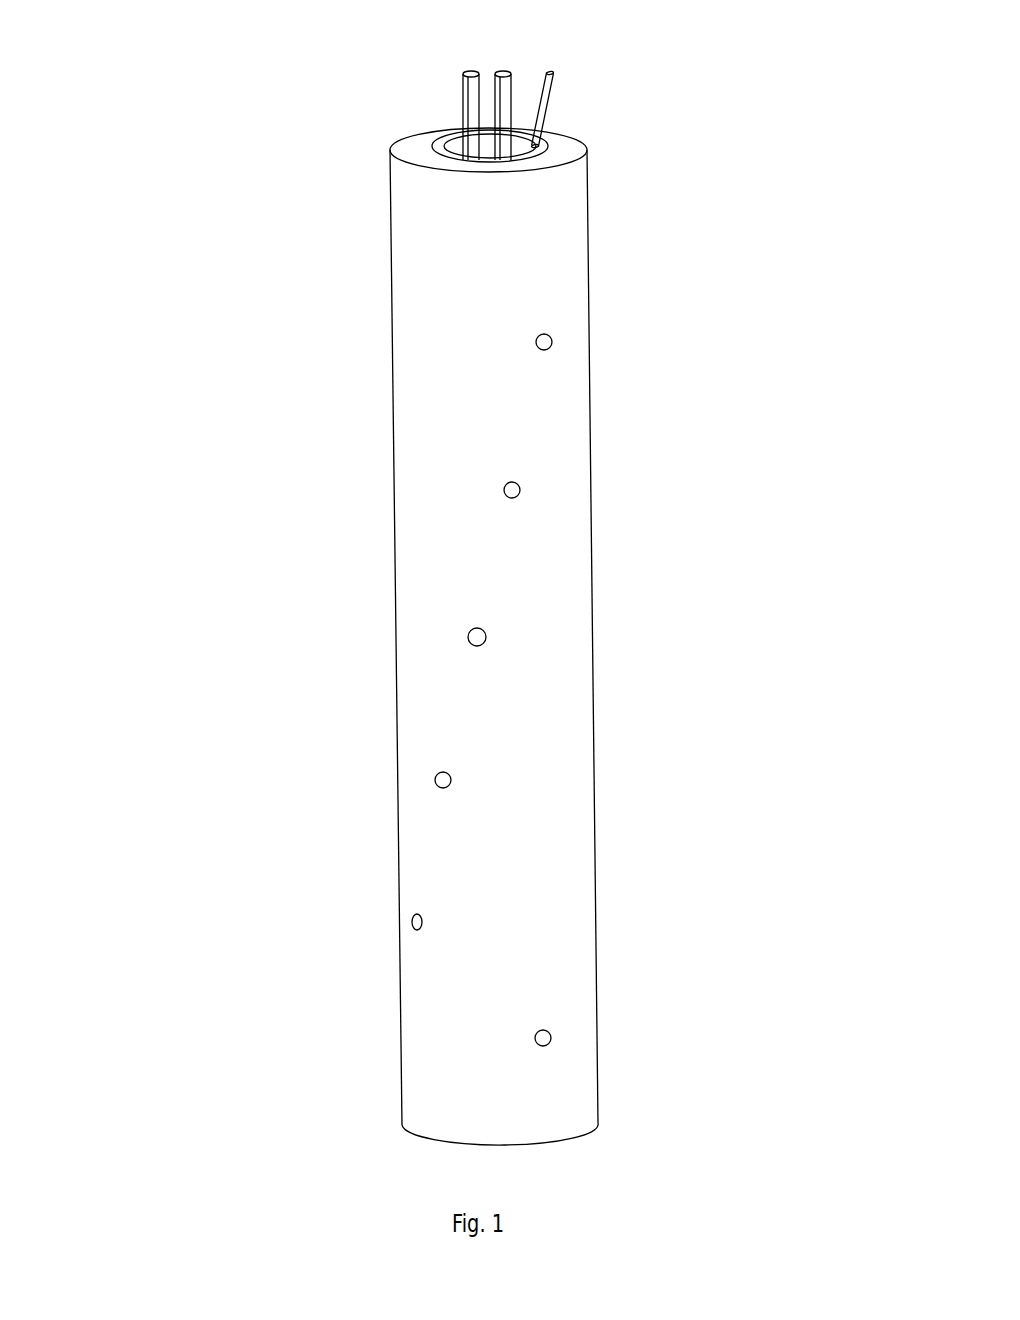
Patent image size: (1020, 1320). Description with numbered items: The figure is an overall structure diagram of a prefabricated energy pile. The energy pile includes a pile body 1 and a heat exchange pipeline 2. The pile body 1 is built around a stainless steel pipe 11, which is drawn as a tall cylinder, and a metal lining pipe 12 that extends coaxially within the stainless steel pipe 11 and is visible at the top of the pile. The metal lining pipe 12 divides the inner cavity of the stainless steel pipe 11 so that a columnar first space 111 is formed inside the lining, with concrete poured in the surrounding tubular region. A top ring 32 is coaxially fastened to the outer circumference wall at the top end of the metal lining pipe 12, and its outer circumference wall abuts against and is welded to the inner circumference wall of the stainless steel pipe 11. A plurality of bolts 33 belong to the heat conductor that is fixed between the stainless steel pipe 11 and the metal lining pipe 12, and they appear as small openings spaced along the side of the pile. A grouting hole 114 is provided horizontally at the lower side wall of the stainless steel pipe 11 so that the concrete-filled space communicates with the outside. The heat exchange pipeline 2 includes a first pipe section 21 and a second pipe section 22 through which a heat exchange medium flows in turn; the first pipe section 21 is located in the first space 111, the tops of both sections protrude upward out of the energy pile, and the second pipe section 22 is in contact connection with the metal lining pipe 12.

The pile body 1 is at (182, 222).
The stainless steel pipe 11 is at (422, 310).
The first space 111 is at (490, 158).
The grouting hole 114 is at (551, 1033).
The metal lining pipe 12 is at (533, 157).
The heat exchange pipeline 2 is at (678, 13).
The first pipe section 21 is at (513, 72).
The second pipe section 22 is at (549, 105).
The top ring 32 is at (403, 151).
The bolts 33 is at (436, 788).